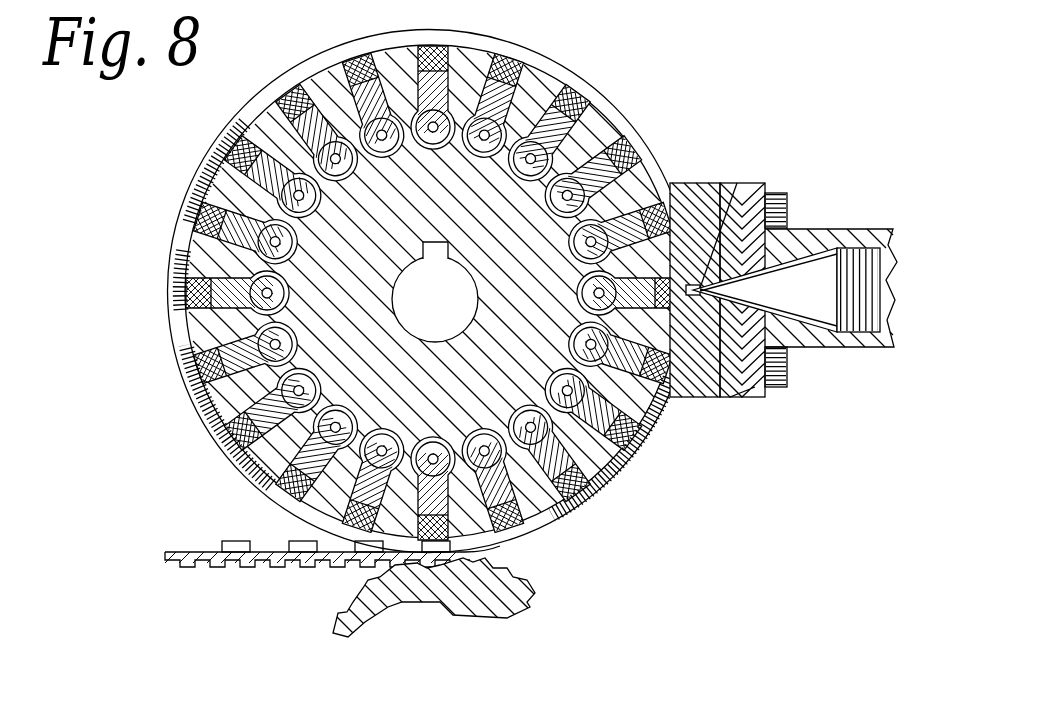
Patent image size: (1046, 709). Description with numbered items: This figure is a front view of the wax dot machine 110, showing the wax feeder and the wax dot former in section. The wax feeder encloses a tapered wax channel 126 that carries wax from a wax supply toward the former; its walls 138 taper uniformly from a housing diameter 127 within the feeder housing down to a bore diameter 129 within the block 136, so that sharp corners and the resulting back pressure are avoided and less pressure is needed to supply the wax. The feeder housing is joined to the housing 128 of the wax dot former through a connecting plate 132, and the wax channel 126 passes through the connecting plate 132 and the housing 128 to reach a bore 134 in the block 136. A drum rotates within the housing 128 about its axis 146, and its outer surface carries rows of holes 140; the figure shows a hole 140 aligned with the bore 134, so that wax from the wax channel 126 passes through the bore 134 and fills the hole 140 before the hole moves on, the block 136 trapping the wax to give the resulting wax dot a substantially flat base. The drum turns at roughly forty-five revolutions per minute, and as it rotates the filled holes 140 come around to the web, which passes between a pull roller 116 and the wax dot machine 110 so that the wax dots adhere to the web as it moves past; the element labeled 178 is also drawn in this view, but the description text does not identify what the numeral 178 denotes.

The wax dot machine 110 is at (124, 166).
The pull roller 116 is at (433, 603).
The wax channel 126 is at (822, 307).
The housing diameter 127 is at (876, 236).
The housing 128 is at (733, 400).
The bore diameter 129 is at (737, 183).
The connecting plate 132 is at (770, 400).
The bore 134 is at (792, 366).
The block 136 is at (718, 220).
The walls 138 is at (806, 246).
The hole 140 is at (682, 422).
The axis 146 is at (450, 313).
The web 178 is at (168, 246).